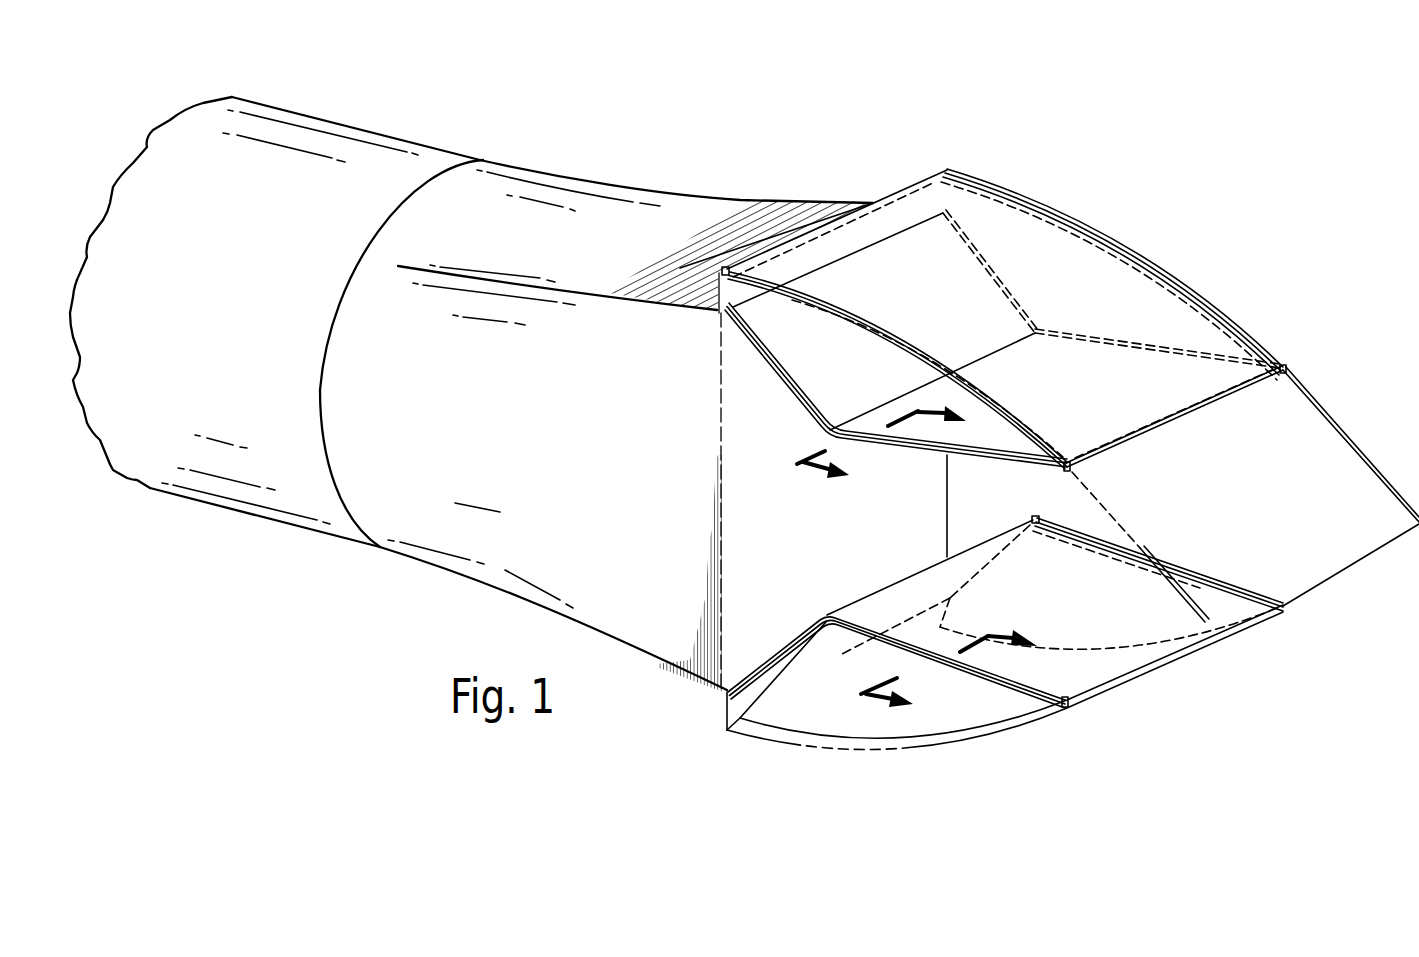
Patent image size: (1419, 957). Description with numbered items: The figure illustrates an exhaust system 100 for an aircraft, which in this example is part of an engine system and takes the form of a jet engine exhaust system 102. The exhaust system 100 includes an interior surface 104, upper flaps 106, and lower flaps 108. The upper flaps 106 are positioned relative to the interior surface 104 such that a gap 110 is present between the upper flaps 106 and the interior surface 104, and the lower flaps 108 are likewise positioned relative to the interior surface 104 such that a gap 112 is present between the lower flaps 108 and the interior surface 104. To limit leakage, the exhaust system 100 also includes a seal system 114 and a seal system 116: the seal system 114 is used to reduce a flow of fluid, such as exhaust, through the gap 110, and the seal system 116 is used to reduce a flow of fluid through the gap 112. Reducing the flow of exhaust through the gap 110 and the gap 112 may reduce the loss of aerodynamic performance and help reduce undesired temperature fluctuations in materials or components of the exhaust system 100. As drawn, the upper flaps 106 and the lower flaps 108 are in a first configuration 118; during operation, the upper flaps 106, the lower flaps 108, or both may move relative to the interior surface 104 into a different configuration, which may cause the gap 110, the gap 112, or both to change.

The exhaust system 100 is at (1228, 78).
The jet engine exhaust system 102 is at (1113, 119).
The interior surface 104 is at (1316, 427).
The upper flaps 106 is at (897, 196).
The lower flaps 108 is at (903, 748).
The gap 110 is at (742, 372).
The gap 112 is at (1220, 570).
The seal system 114 is at (784, 404).
The seal system 116 is at (773, 634).
The first configuration 118 is at (1154, 210).